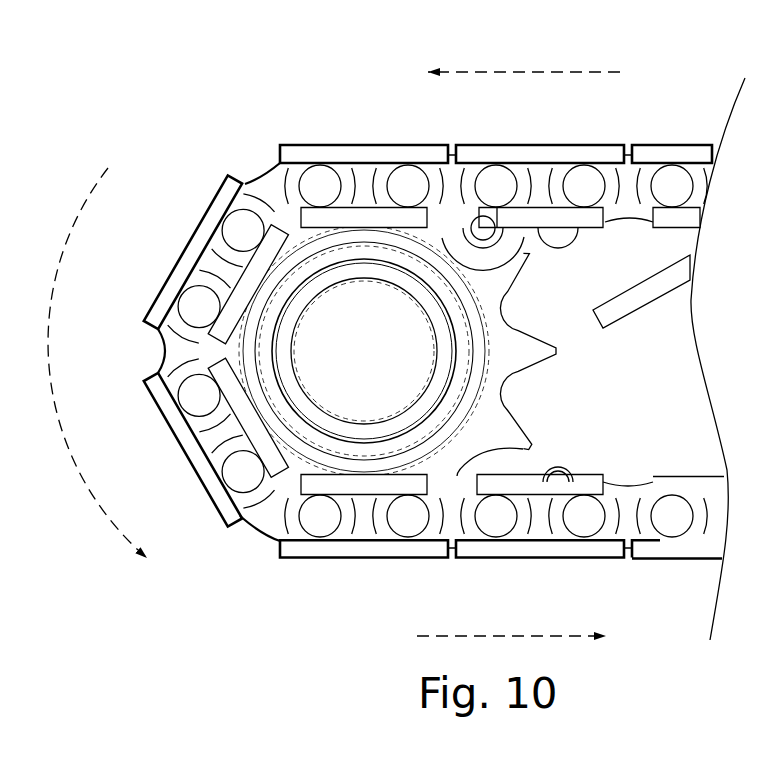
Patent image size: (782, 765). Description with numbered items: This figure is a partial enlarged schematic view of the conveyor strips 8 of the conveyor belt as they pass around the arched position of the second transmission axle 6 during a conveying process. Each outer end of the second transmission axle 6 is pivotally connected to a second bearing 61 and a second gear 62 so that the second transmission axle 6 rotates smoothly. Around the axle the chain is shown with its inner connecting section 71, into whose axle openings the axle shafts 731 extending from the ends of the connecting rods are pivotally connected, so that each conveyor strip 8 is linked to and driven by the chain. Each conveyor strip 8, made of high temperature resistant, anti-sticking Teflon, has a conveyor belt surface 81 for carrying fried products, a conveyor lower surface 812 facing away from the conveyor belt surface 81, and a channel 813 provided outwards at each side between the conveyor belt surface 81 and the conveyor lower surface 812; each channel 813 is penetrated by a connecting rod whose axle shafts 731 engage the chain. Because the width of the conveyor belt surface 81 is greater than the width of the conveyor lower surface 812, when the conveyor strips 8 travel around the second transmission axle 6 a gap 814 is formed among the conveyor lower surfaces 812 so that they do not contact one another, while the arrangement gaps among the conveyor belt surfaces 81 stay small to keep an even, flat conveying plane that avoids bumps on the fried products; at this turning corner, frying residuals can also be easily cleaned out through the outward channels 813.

The second transmission axle 6 is at (352, 310).
The second bearing 61 is at (453, 415).
The second gear 62 is at (503, 353).
The inner connecting section 71 is at (613, 193).
The axle shaft 731 is at (493, 187).
The conveyor strip 8 is at (178, 253).
The conveyor belt surface 81 is at (300, 146).
The conveyor lower surface 812 is at (333, 227).
The channel 813 is at (498, 210).
The gap 814 is at (290, 227).